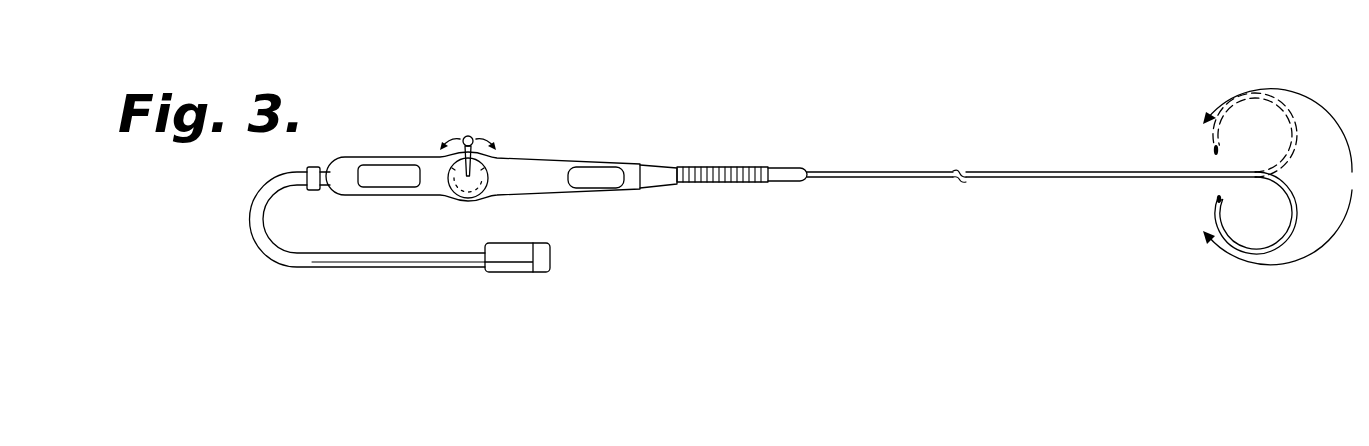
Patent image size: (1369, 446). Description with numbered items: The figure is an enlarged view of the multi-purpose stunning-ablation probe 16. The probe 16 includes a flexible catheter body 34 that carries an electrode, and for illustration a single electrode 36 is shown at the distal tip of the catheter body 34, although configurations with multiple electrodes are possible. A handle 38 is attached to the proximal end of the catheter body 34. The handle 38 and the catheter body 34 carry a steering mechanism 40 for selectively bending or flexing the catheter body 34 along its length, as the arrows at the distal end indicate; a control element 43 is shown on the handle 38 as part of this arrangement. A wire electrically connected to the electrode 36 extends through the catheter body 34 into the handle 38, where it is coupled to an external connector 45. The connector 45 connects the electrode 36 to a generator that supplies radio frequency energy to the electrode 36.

The multi-purpose stunning-ablation probe 16 is at (750, 153).
The flexible catheter body 34 is at (1008, 172).
The electrode 36 is at (1212, 202).
The handle 38 is at (558, 172).
The steering mechanism 40 is at (462, 124).
The dial 43 is at (488, 172).
The external connector 45 is at (521, 263).